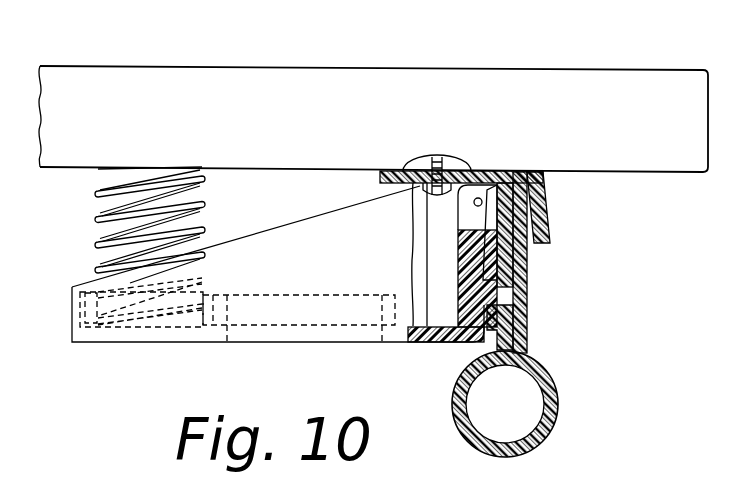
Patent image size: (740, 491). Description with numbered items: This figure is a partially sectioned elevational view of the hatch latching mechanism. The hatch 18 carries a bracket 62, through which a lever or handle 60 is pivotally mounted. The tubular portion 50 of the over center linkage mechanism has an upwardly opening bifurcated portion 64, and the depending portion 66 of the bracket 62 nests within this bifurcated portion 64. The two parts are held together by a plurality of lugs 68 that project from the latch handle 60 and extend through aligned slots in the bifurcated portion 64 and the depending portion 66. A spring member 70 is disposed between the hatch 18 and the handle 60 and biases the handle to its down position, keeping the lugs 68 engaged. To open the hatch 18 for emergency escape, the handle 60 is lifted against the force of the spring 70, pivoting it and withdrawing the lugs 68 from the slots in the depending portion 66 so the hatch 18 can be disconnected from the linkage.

The hatch 18 is at (604, 68).
The tubular portion 50 is at (550, 409).
The lever or handle 60 is at (335, 340).
The bracket 62 is at (537, 185).
The bifurcated portion 64 is at (520, 338).
The depending portion 66 is at (521, 249).
The lugs 68 is at (511, 277).
The spring member 70 is at (100, 219).